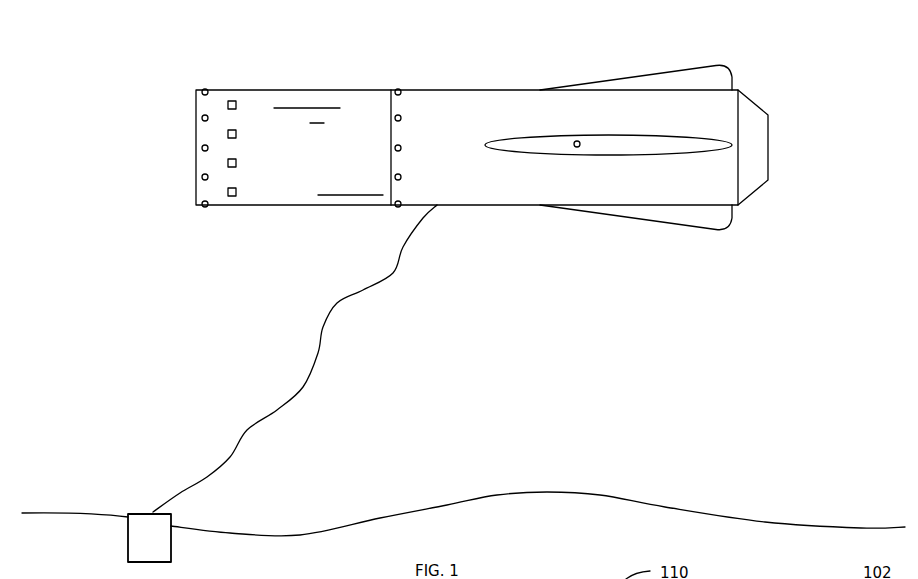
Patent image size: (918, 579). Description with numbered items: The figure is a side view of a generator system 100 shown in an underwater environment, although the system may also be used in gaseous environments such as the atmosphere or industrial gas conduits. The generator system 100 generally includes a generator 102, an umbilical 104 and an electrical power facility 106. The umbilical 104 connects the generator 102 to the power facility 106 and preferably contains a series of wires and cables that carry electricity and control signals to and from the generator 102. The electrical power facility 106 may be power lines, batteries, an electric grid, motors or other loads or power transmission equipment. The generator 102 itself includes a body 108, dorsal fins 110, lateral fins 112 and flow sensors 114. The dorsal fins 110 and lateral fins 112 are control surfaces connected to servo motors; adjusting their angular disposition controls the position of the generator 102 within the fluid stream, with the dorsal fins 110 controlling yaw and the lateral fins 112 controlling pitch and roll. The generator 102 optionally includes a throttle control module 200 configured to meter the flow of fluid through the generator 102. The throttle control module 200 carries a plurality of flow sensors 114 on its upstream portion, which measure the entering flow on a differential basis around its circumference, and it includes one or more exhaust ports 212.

The generator system 100 is at (472, 288).
The generator 102 is at (805, 152).
The umbilical 104 is at (318, 335).
The electrical power facility 106 is at (128, 514).
The body 108 is at (723, 165).
The dorsal fins 110 is at (420, 90).
The lateral fins 112 is at (529, 153).
The flow sensors 114 is at (205, 118).
The throttle control module 200 is at (304, 192).
The exhaust ports 212 is at (230, 102).